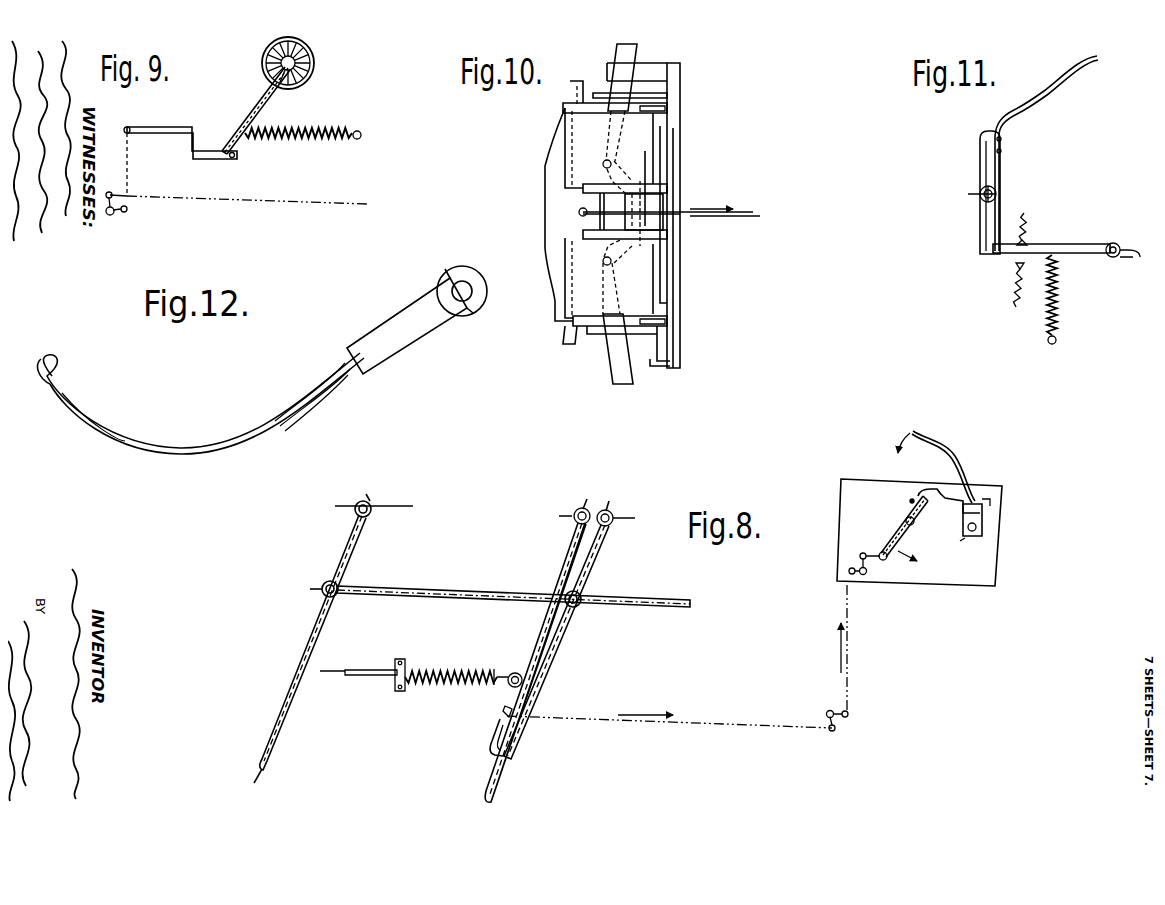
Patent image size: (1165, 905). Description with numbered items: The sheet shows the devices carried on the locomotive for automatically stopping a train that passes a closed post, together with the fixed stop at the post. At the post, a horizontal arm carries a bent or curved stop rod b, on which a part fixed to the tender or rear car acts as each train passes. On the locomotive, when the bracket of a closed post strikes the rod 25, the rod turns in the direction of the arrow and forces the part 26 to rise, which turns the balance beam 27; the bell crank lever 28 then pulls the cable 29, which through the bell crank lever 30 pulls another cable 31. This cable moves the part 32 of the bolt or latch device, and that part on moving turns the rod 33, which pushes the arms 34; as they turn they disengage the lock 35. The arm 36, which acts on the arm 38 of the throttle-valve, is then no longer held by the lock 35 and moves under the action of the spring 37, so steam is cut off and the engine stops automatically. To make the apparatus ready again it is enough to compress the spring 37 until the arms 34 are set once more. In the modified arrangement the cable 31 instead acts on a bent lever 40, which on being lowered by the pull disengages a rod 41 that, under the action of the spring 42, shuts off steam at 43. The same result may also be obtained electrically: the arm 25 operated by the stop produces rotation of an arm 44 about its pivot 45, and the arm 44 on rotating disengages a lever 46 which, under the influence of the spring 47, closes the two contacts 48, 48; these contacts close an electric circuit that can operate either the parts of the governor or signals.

In FIG. 11, the rod 25 is at (1044, 95).
In FIG. 8, the rod 25 is at (950, 450).
In FIG. 8, the part 26 is at (943, 500).
In FIG. 8, the balance beam 27 is at (907, 533).
In FIG. 8, the bell crank lever 28 is at (857, 578).
In FIG. 8, the cable 29 is at (847, 675).
In FIG. 8, the bell crank lever 30 is at (840, 717).
In FIG. 9, the cable 31 is at (127, 154).
In FIG. 8, the cable 31 is at (669, 738).
In FIG. 10, the part 32 is at (579, 211).
In FIG. 10, the rod 33 is at (683, 295).
In FIG. 10, the arms 34 is at (614, 363).
In FIG. 10, the lock 35 is at (657, 220).
In FIG. 8, the arm 36 is at (530, 630).
In FIG. 8, the spring 37 is at (447, 671).
In FIG. 8, the arm of the throttle-valve 38 is at (557, 650).
In FIG. 9, the bent lever 40 is at (190, 141).
In FIG. 9, the rod 41 is at (245, 109).
In FIG. 9, the spring 42 is at (307, 137).
In FIG. 9, the steam shut-off 43 is at (307, 61).
In FIG. 11, the arm 44 is at (990, 165).
In FIG. 11, the pivot 45 is at (997, 193).
In FIG. 11, the lever 46 is at (1060, 245).
In FIG. 11, the spring 47 is at (1057, 293).
In FIG. 11, the contacts 48 is at (1018, 275).
In FIG. 12, the stop rod b is at (303, 403).